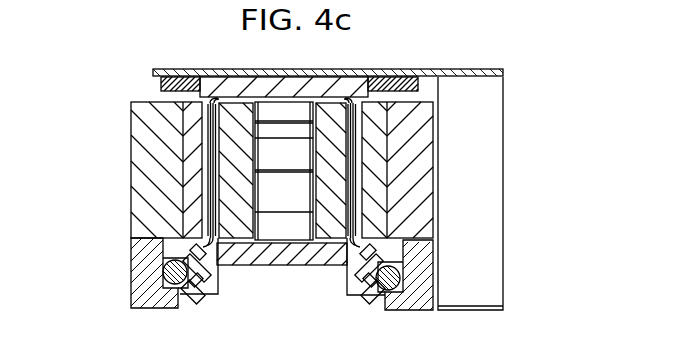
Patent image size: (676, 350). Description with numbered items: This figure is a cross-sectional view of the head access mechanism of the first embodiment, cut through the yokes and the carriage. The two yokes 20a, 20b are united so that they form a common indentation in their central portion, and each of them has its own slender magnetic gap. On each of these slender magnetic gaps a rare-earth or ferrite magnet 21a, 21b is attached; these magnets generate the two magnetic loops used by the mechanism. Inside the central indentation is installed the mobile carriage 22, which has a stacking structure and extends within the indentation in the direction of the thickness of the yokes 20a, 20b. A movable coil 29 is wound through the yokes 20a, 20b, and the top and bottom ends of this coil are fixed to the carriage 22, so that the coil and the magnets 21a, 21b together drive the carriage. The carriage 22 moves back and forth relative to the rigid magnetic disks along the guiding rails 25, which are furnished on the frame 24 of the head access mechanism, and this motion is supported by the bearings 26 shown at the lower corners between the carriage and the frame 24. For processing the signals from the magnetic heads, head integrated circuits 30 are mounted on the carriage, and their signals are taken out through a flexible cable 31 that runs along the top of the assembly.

The head integrated circuit 30 is at (188, 84).
The flexible cable 31 is at (503, 92).
The magnet 21a is at (190, 133).
The magnet 21b is at (387, 113).
The yoke 20a is at (232, 182).
The yoke 20b is at (342, 148).
The movable coil 29 is at (358, 208).
The mobile carriage 22 is at (278, 203).
The frame 24 is at (148, 309).
The guiding rail 25 is at (177, 290).
The bearing 26 is at (206, 304).